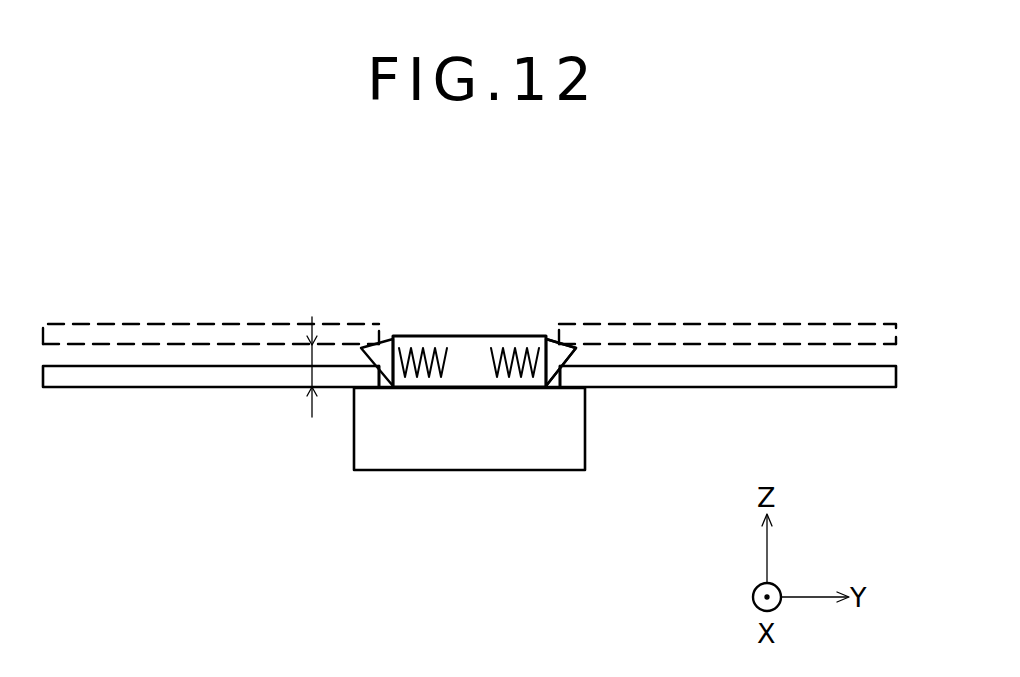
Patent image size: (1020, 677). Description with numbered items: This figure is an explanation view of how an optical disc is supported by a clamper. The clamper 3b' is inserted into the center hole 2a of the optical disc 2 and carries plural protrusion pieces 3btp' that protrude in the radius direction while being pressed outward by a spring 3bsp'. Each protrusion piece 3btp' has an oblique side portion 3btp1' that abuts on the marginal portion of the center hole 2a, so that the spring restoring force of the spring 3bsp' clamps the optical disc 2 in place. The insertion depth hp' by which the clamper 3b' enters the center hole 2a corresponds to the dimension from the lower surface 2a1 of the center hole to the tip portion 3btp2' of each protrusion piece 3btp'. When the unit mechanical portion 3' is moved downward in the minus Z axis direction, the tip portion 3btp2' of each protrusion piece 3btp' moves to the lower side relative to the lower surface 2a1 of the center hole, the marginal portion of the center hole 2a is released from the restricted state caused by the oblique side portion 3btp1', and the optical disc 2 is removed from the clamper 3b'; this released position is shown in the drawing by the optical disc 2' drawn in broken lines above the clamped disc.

The optical disc 2 is at (469, 405).
The optical disc (released state) 2' is at (469, 291).
The center hole 2a is at (553, 378).
The lower surface of the center hole 2a1 is at (373, 390).
The unit mechanical portion 3' is at (469, 463).
The clamper 3b' is at (474, 316).
The spring 3bsp' is at (469, 303).
The protrusion piece 3btp' is at (476, 315).
The oblique side portion 3btp1' is at (615, 397).
The tip portion 3btp2' is at (621, 316).
The insertion depth hp' is at (307, 384).